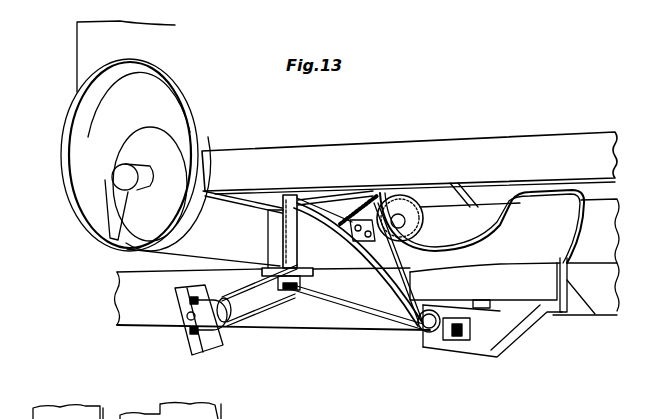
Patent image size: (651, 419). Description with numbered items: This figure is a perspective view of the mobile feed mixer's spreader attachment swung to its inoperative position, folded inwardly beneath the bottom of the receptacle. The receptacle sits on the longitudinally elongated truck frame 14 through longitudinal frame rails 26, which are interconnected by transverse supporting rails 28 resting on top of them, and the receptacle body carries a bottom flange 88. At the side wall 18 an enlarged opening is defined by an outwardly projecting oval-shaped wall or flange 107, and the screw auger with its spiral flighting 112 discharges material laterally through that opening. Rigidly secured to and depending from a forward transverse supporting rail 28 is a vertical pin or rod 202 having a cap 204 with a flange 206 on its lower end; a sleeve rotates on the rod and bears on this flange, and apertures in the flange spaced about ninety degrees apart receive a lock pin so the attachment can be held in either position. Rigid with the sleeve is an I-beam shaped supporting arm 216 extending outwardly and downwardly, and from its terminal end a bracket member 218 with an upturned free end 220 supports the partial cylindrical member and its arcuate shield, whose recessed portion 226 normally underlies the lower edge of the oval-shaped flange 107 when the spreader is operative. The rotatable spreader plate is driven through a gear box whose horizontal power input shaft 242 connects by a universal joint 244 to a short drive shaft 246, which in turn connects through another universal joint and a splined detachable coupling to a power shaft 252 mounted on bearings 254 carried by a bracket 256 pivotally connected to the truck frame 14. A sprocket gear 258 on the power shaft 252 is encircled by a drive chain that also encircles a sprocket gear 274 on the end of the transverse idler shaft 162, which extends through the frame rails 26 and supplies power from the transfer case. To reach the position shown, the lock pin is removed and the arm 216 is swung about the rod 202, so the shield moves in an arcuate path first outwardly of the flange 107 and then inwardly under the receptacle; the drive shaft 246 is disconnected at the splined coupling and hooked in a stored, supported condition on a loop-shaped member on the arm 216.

The truck frame 14 is at (335, 314).
The side wall 18 is at (79, 37).
The frame rail 26 is at (602, 237).
The transverse supporting rail 28 is at (264, 200).
The bottom flange 88 is at (568, 141).
The oval shaped projecting wall 107 is at (147, 70).
The spiral flighting 112 is at (173, 143).
The transverse idler shaft 162 is at (410, 205).
The pin or rod 202 is at (299, 196).
The cap 204 is at (290, 285).
The flange 206 is at (307, 277).
The supporting arm 216 is at (386, 312).
The bracket member 218 is at (521, 340).
The upturned free end 220 is at (572, 309).
The recessed portion 226 is at (508, 232).
The power input shaft 242 is at (458, 341).
The universal joint 244 is at (430, 333).
The drive shaft 246 is at (406, 300).
The power shaft 252 is at (196, 322).
The bearings 254 is at (190, 302).
The bracket 256 is at (221, 344).
The sprocket gear 258 is at (230, 284).
The sprocket gear 274 is at (426, 214).